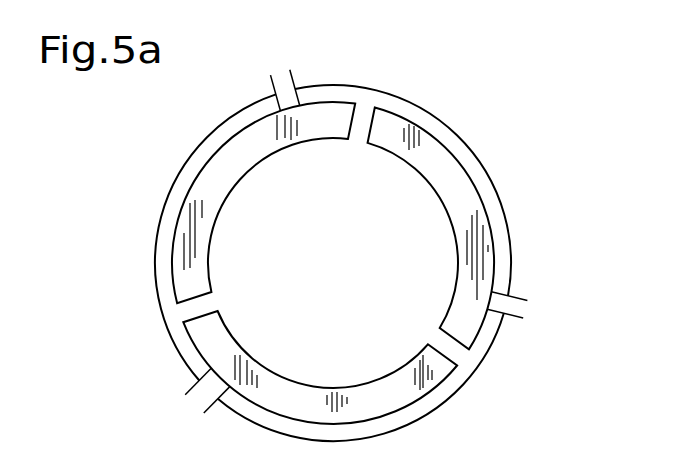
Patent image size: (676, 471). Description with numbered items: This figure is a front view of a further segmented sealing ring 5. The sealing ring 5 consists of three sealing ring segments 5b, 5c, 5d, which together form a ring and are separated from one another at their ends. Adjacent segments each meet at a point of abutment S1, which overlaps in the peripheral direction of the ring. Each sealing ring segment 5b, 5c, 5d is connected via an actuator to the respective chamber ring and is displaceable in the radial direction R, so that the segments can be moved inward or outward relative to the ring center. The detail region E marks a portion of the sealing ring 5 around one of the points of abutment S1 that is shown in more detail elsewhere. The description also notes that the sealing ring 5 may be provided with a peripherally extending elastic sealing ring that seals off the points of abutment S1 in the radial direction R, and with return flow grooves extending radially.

The sealing ring 5 is at (490, 95).
The sealing ring segment 5b is at (197, 192).
The sealing ring segment 5c is at (473, 190).
The sealing ring segment 5d is at (382, 403).
The point of abutment S1 is at (309, 64).
The detail region E is at (252, 46).
The radial direction R is at (243, 175).